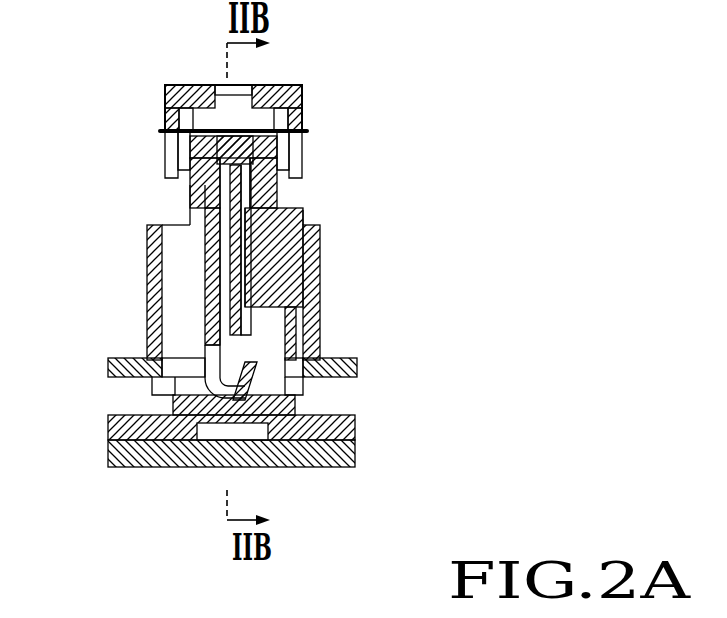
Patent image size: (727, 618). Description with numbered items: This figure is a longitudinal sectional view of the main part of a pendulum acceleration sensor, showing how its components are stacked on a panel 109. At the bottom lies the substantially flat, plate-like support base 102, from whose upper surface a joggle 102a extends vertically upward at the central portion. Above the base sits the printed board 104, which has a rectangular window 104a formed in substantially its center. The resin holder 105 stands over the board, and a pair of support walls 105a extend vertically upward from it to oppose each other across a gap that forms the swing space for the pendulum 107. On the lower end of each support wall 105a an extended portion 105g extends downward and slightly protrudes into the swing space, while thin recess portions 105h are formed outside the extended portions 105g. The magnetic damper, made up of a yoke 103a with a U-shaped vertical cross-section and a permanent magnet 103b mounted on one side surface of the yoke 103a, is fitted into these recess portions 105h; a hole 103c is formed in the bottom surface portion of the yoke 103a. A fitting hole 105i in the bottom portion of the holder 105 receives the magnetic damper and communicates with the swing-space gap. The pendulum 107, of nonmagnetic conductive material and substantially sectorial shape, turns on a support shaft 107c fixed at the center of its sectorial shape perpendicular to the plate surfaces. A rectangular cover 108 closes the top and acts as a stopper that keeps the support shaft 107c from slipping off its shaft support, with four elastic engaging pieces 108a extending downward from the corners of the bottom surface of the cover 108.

The support base 102 is at (372, 435).
The joggle 102a is at (303, 380).
The yoke 103a is at (200, 263).
The permanent magnet 103b is at (300, 233).
The hole 103c is at (222, 450).
The printed board 104 is at (372, 362).
The rectangular window 104a is at (165, 373).
The holder 105 is at (338, 293).
The support wall 105a is at (300, 190).
The extended portion 105g is at (205, 290).
The thin recess portion 105h is at (193, 207).
The fitting hole 105i is at (215, 335).
The pendulum 107 is at (185, 165).
The support shaft 107c is at (305, 130).
The cover 108 is at (284, 86).
The elastic engaging piece 108a is at (300, 158).
The panel 109 is at (330, 462).